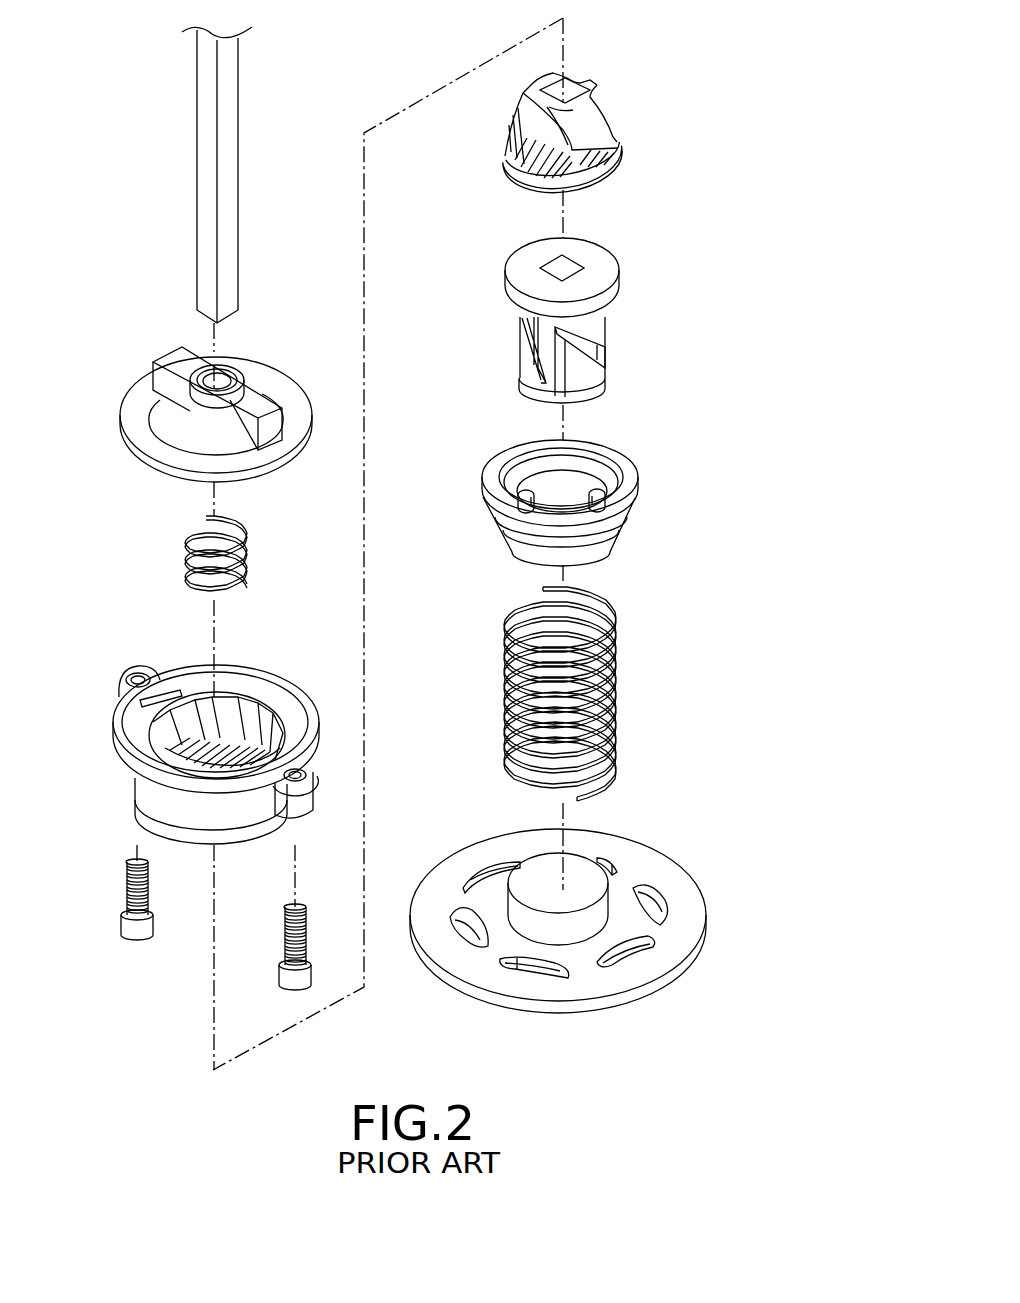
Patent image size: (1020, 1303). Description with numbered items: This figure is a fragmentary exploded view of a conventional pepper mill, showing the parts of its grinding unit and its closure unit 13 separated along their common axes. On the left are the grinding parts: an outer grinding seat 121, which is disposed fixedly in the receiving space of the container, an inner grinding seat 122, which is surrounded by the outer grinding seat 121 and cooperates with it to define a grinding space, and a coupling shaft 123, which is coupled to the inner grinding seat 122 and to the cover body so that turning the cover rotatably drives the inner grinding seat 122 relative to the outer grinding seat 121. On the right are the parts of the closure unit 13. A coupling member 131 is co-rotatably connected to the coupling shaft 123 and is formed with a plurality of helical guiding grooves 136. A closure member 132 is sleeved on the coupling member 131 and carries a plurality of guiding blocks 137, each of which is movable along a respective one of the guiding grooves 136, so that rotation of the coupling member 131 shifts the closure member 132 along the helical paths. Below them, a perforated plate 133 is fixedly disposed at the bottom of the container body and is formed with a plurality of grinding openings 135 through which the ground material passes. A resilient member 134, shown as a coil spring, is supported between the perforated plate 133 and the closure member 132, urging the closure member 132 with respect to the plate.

The closure unit 13 is at (673, 398).
The outer grinding seat 121 is at (317, 760).
The inner grinding seat 122 is at (590, 125).
The coupling shaft 123 is at (230, 226).
The coupling member 131 is at (578, 320).
The closure member 132 is at (590, 497).
The perforated plate 133 is at (588, 929).
The resilient member 134 is at (610, 693).
The grinding openings 135 is at (643, 898).
The helical guiding grooves 136 is at (582, 337).
The guiding blocks 137 is at (598, 492).